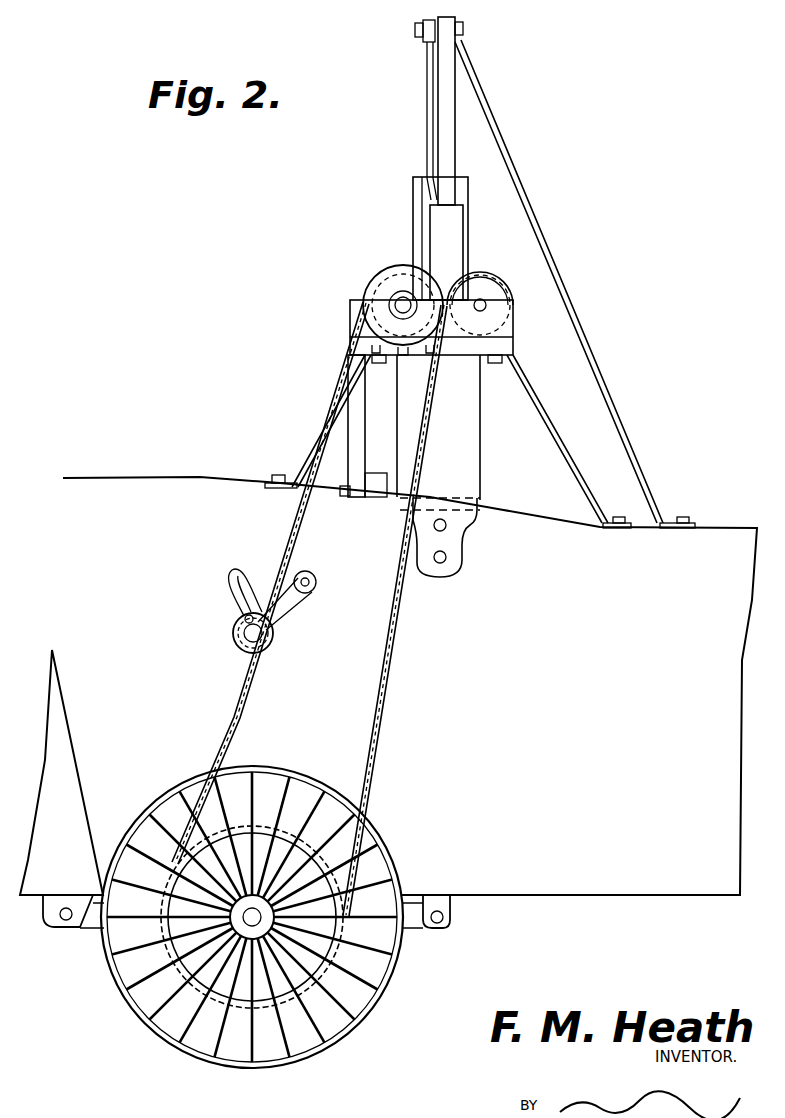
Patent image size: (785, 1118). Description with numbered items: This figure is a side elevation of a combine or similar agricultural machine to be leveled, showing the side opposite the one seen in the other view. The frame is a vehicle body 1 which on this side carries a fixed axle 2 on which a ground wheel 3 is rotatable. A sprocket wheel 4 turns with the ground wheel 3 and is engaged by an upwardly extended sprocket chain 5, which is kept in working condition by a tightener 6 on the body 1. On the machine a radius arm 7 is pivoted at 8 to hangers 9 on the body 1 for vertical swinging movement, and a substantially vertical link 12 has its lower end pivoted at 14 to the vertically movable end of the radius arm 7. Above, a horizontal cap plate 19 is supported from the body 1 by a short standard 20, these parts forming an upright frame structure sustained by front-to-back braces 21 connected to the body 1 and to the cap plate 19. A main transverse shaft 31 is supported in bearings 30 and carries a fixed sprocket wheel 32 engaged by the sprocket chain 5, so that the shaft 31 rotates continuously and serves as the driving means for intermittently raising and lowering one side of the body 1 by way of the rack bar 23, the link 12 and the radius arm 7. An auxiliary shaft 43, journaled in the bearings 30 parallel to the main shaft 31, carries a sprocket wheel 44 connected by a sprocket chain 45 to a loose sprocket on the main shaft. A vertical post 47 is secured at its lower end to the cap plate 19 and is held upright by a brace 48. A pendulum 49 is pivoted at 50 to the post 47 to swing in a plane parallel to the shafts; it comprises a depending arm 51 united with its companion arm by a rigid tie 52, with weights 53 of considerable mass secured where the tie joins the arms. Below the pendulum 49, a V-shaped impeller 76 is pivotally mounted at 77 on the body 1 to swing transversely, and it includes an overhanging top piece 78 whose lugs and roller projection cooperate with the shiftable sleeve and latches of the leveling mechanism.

The body 1 is at (388, 686).
The fixed axle 2 is at (216, 1000).
The ground wheel 3 is at (126, 997).
The sprocket wheel 4 is at (296, 834).
The sprocket chain 5 is at (384, 682).
The tightener 6 is at (244, 610).
The radius arm 7 is at (97, 938).
The pivot 8 is at (60, 924).
The hangers 9 is at (62, 897).
The vertical link 12 is at (450, 895).
The pivot 14 is at (445, 928).
The horizontal cap plate 19 is at (510, 350).
The short standard 20 is at (482, 466).
The front-to-back braces 21 is at (311, 456).
The rack bar 23 is at (415, 178).
The bearings 30 is at (510, 330).
The main transverse shaft 31 is at (398, 300).
The sprocket wheel 32 is at (408, 355).
The auxiliary shaft 43 is at (492, 300).
The sprocket wheel 44 is at (488, 290).
The sprocket chain 45 is at (472, 272).
The vertical post 47 is at (455, 147).
The brace 48 is at (538, 222).
The pendulum 49 is at (428, 22).
The pendulum pivot 50 is at (420, 38).
The depending arm 51 is at (427, 126).
The rigid tie 52 is at (428, 246).
The weights 53 is at (458, 218).
The V-shaped impeller 76 is at (362, 426).
The impeller pivot 77 is at (352, 498).
The overhanging top piece 78 is at (352, 296).